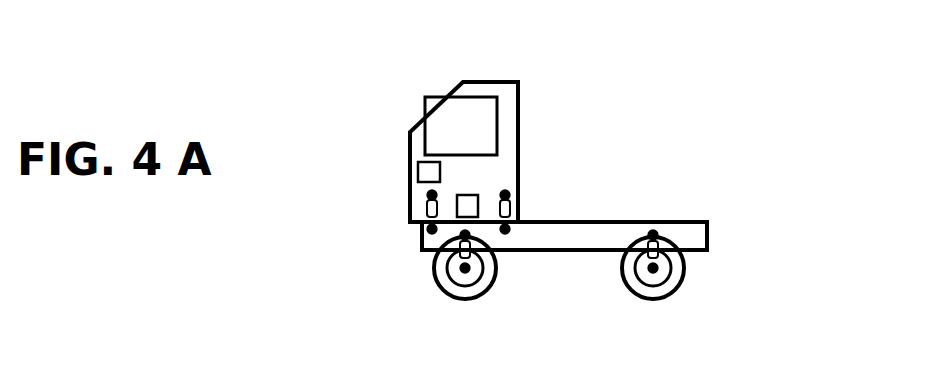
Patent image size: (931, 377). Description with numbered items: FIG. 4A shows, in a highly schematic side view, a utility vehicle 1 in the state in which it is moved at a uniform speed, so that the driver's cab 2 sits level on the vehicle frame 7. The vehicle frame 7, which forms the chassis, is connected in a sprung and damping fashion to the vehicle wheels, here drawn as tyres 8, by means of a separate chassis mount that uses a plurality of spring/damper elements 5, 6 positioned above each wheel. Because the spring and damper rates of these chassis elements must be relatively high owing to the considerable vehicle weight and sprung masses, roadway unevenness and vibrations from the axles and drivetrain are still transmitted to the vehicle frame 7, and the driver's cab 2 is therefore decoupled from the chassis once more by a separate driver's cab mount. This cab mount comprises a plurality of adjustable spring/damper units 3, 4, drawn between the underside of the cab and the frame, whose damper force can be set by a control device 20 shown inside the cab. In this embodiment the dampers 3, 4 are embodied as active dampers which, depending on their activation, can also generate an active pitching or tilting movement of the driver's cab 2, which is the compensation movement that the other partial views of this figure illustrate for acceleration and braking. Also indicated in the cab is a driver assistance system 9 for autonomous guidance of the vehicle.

The utility vehicle 1 is at (614, 36).
The driver's cab 2 is at (495, 167).
The adjustable damper of the driver's cab mount 3 is at (430, 210).
The adjustable damper of the driver's cab mount 4 is at (510, 210).
The adjustable damper of the chassis 5 is at (440, 250).
The adjustable damper of the chassis 6 is at (683, 257).
The vehicle frame 7 is at (682, 237).
The tyre 8 is at (478, 286).
The driver assistance system for autonomous vehicle guidance 9 is at (417, 165).
The control device 20 is at (466, 195).